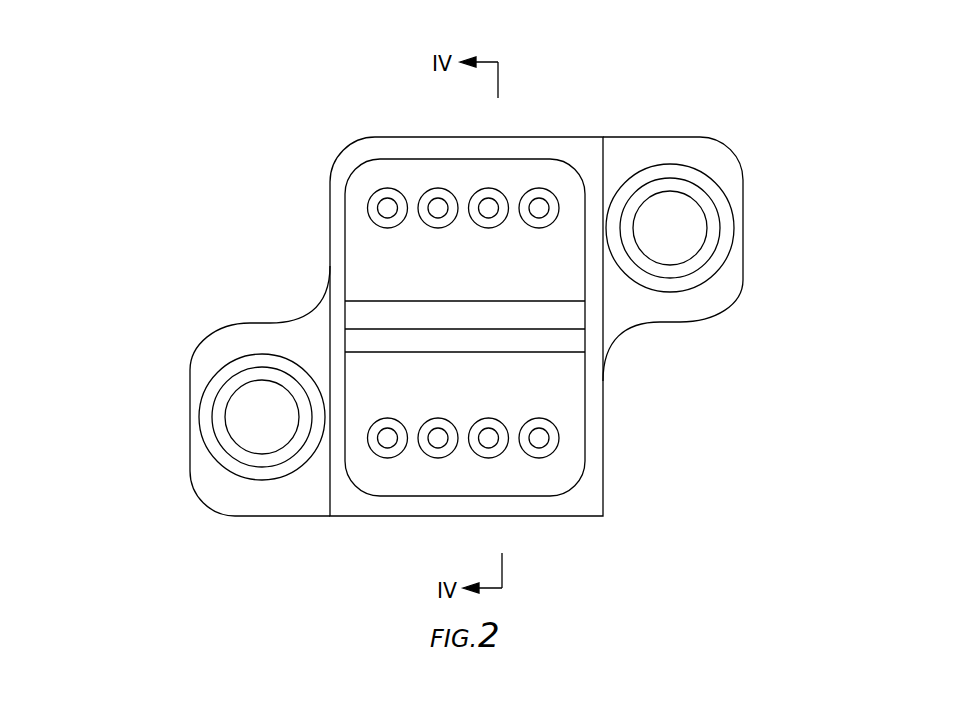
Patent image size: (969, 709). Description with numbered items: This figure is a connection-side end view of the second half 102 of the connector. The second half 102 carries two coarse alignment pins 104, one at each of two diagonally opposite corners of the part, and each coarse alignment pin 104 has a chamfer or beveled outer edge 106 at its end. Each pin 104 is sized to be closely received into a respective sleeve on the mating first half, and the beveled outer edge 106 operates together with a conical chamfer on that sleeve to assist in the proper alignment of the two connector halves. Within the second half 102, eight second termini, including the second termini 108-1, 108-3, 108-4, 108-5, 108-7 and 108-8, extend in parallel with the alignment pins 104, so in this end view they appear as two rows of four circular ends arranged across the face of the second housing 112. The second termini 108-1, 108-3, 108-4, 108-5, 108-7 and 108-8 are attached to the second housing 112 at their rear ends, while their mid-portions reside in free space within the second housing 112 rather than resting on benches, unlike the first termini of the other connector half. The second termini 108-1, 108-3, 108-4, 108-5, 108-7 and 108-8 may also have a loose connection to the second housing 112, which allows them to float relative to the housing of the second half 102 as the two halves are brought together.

The second half of the connector 102 is at (812, 135).
The coarse alignment pin 104 is at (660, 227).
The beveled outer edge 106 is at (705, 251).
The second terminus 108-1 is at (541, 190).
The second terminus 108-3 is at (437, 190).
The second terminus 108-4 is at (386, 190).
The second terminus 108-5 is at (559, 437).
The second terminus 108-7 is at (438, 457).
The second terminus 108-8 is at (388, 457).
The second housing 112 is at (336, 240).